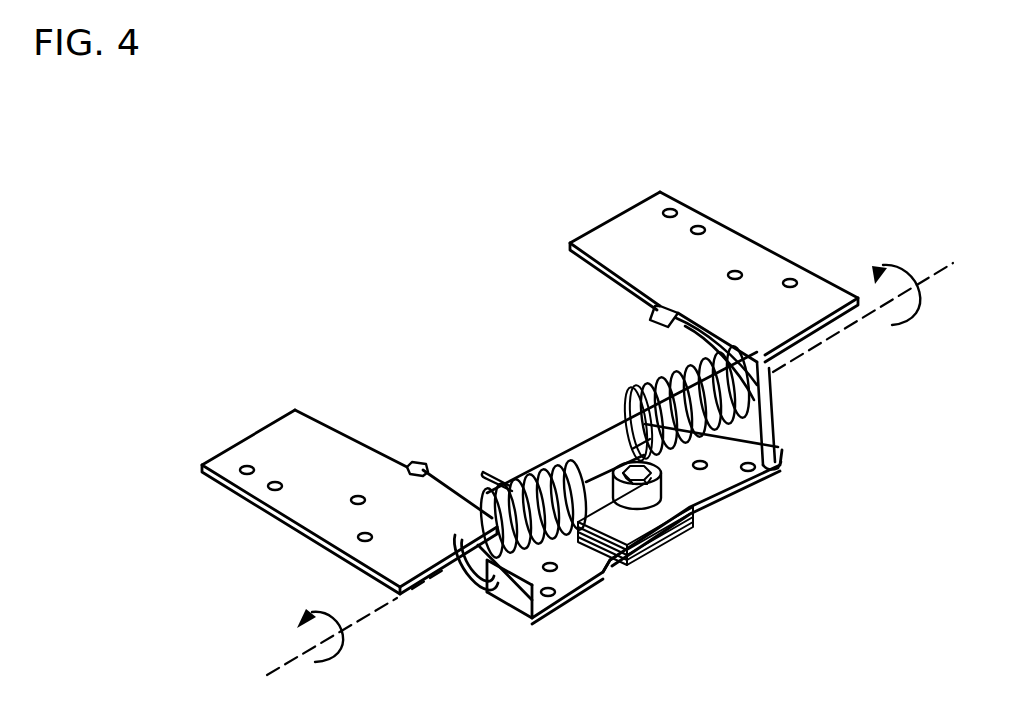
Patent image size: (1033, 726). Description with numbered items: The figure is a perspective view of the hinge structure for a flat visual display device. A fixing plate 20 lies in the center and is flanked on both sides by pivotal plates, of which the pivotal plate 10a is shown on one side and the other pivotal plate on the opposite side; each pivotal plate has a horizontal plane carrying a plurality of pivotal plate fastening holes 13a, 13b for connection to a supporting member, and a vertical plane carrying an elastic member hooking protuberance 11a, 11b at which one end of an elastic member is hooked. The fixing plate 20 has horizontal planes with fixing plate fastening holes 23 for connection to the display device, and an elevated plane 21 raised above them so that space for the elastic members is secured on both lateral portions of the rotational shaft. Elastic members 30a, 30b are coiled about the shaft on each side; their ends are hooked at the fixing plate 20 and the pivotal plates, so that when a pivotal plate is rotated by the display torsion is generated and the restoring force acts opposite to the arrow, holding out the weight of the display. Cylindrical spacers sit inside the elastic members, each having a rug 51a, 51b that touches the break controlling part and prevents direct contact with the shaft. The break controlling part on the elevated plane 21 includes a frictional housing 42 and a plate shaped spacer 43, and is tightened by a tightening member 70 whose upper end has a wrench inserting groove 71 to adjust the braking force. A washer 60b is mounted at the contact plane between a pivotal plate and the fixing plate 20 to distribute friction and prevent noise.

The pivotal plate 10a is at (282, 544).
The pivotal plate fastening holes 13a is at (245, 474).
The elastic member hooking protuberance 11a is at (418, 459).
The pivotal plate fastening holes 13b is at (737, 273).
The elastic member hooking protuberance 11b is at (650, 318).
The washer 60b is at (775, 386).
The rug 51a is at (563, 452).
The rug 51b is at (630, 410).
The frictional housing 42 is at (590, 440).
The elastic member 30a is at (525, 471).
The elastic member 30b is at (735, 423).
The fixing plate 20 is at (720, 524).
The elevated plane 21 is at (612, 562).
The fixing plate fastening hole 23 is at (750, 471).
The plate shaped spacer 43 is at (694, 509).
The tightening member 70 is at (662, 496).
The wrench inserting groove 71 is at (641, 478).